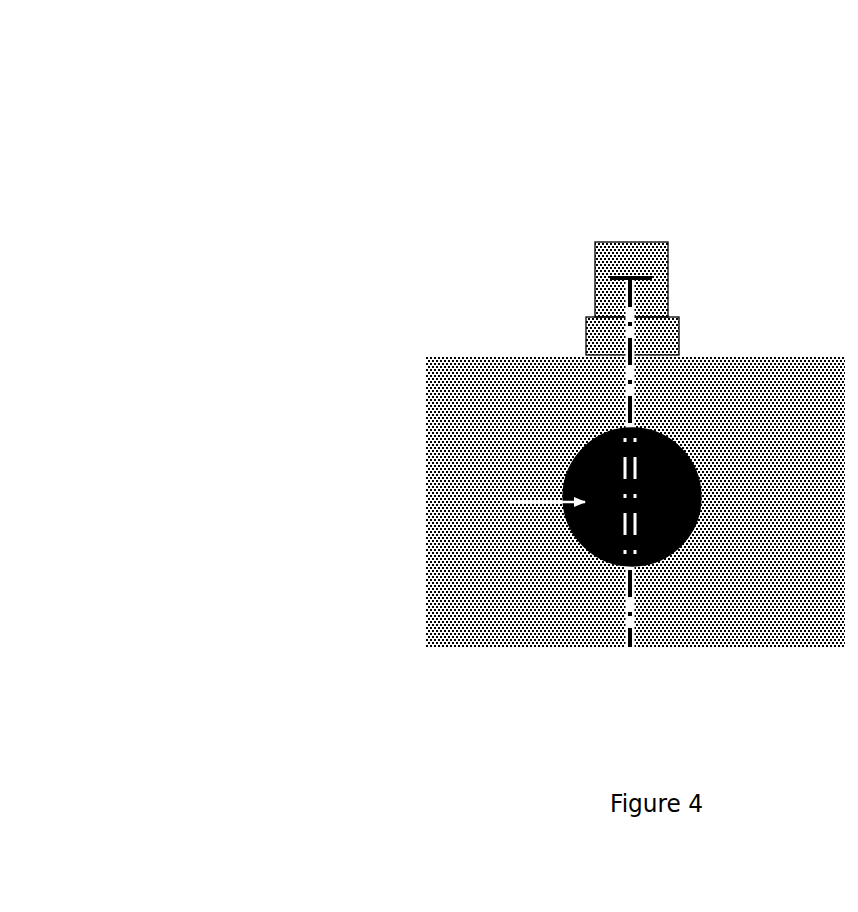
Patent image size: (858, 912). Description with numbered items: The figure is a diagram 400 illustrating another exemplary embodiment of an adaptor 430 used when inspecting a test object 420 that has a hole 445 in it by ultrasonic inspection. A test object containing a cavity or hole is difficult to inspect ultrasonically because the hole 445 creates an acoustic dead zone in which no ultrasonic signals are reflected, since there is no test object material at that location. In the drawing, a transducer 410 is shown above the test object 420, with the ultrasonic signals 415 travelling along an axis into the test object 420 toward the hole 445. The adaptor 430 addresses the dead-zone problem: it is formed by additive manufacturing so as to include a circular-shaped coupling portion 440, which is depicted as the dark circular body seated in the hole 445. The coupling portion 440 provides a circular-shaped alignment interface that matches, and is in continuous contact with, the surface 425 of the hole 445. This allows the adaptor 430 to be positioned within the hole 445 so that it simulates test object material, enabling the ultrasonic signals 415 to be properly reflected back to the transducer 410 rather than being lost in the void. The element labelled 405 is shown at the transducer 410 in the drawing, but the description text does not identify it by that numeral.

The diagram 400 is at (455, 342).
The probe housing 405 is at (592, 254).
The transducer 410 is at (662, 278).
The ultrasonic signals 415 is at (630, 375).
The test object 420 is at (635, 502).
The surface 425 is at (704, 518).
The adaptor 430 is at (537, 479).
The coupling portion 440 is at (676, 547).
The hole 445 is at (706, 483).